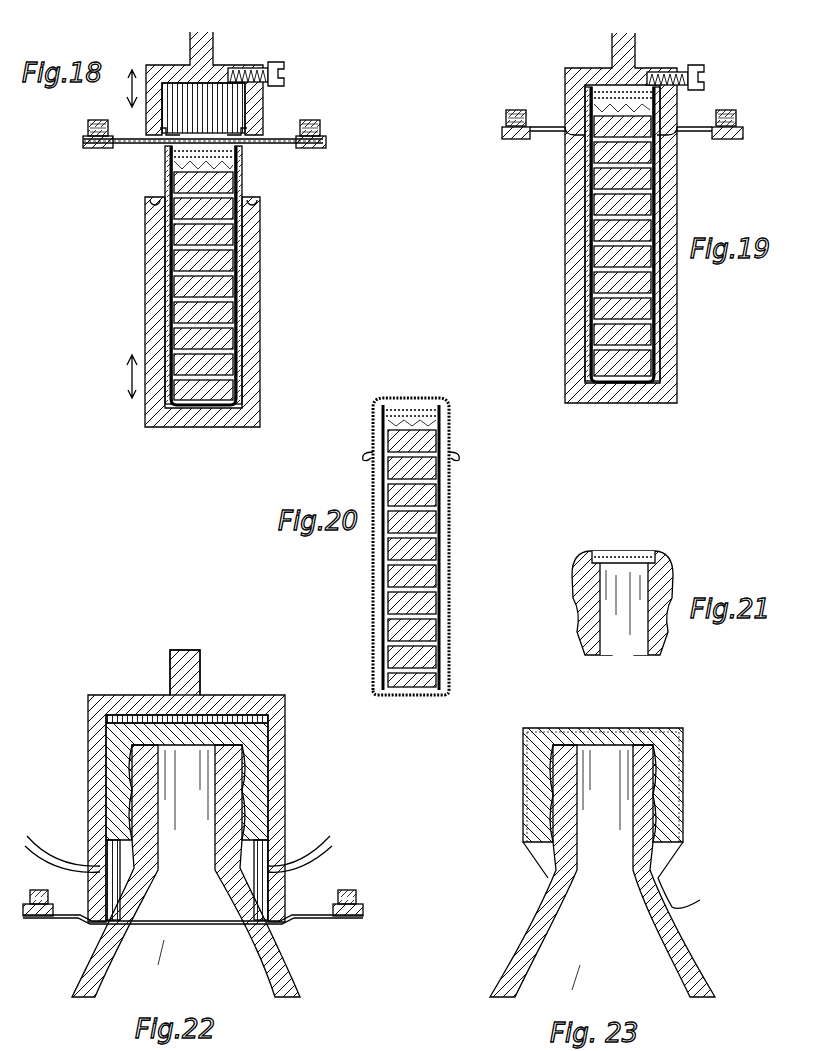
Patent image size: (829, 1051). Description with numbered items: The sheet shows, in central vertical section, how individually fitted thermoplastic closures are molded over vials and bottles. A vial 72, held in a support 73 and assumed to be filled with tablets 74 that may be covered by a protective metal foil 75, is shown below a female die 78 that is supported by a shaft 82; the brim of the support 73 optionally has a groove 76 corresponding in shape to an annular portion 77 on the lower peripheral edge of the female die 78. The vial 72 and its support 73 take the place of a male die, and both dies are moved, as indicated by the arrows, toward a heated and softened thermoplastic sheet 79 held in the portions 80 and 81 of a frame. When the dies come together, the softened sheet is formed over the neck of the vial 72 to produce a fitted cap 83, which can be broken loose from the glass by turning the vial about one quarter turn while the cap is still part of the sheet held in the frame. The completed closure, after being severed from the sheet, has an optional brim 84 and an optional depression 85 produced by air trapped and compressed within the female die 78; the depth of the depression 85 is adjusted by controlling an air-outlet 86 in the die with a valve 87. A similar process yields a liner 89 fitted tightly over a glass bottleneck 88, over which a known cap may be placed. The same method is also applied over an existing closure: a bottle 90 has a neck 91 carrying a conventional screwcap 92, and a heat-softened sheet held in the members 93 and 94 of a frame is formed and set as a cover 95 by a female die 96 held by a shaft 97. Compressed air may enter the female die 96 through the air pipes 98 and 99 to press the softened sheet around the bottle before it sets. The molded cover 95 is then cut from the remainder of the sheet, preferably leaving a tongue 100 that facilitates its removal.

In FIG. 18, the vial 72 is at (242, 180).
In FIG. 19, the vial 72 is at (588, 242).
In FIG. 18, the support 73 is at (250, 322).
In FIG. 19, the support 73 is at (578, 285).
In FIG. 18, the tablets 74 is at (220, 250).
In FIG. 19, the tablets 74 is at (578, 167).
In FIG. 18, the protective metal foil 75 is at (166, 177).
In FIG. 18, the groove 76 is at (152, 194).
In FIG. 18, the annular portion 77 is at (265, 135).
In FIG. 18, the female die 78 is at (218, 68).
In FIG. 19, the female die 78 is at (586, 75).
In FIG. 18, the thermoplastic sheet 79 is at (268, 143).
In FIG. 18, the frame portion 80 is at (318, 126).
In FIG. 19, the frame portion 80 is at (508, 122).
In FIG. 18, the frame portion 81 is at (272, 143).
In FIG. 19, the frame portion 81 is at (508, 137).
In FIG. 18, the shaft 82 is at (188, 52).
In FIG. 19, the shaft 82 is at (628, 44).
In FIG. 19, the fitted cap 83 is at (583, 112).
In FIG. 20, the fitted cap 83 is at (450, 427).
In FIG. 20, the brim 84 is at (457, 462).
In FIG. 20, the depression 85 is at (400, 402).
In FIG. 18, the air-outlet 86 is at (242, 70).
In FIG. 19, the air-outlet 86 is at (652, 77).
In FIG. 18, the valve 87 is at (284, 72).
In FIG. 19, the valve 87 is at (704, 72).
In FIG. 21, the bottleneck 88 is at (580, 612).
In FIG. 21, the liner 89 is at (627, 563).
In FIG. 22, the bottle 90 is at (280, 984).
In FIG. 23, the bottle 90 is at (688, 972).
In FIG. 22, the neck 91 is at (137, 750).
In FIG. 22, the screwcap 92 is at (237, 722).
In FIG. 23, the screwcap 92 is at (540, 767).
In FIG. 22, the frame member 93 is at (356, 902).
In FIG. 22, the frame member 94 is at (357, 922).
In FIG. 22, the cover 95 is at (268, 773).
In FIG. 23, the cover 95 is at (672, 730).
In FIG. 22, the female die 96 is at (102, 773).
In FIG. 22, the shaft 97 is at (186, 665).
In FIG. 22, the air pipe 98 is at (330, 836).
In FIG. 22, the air pipe 99 is at (30, 820).
In FIG. 23, the tongue 100 is at (673, 907).